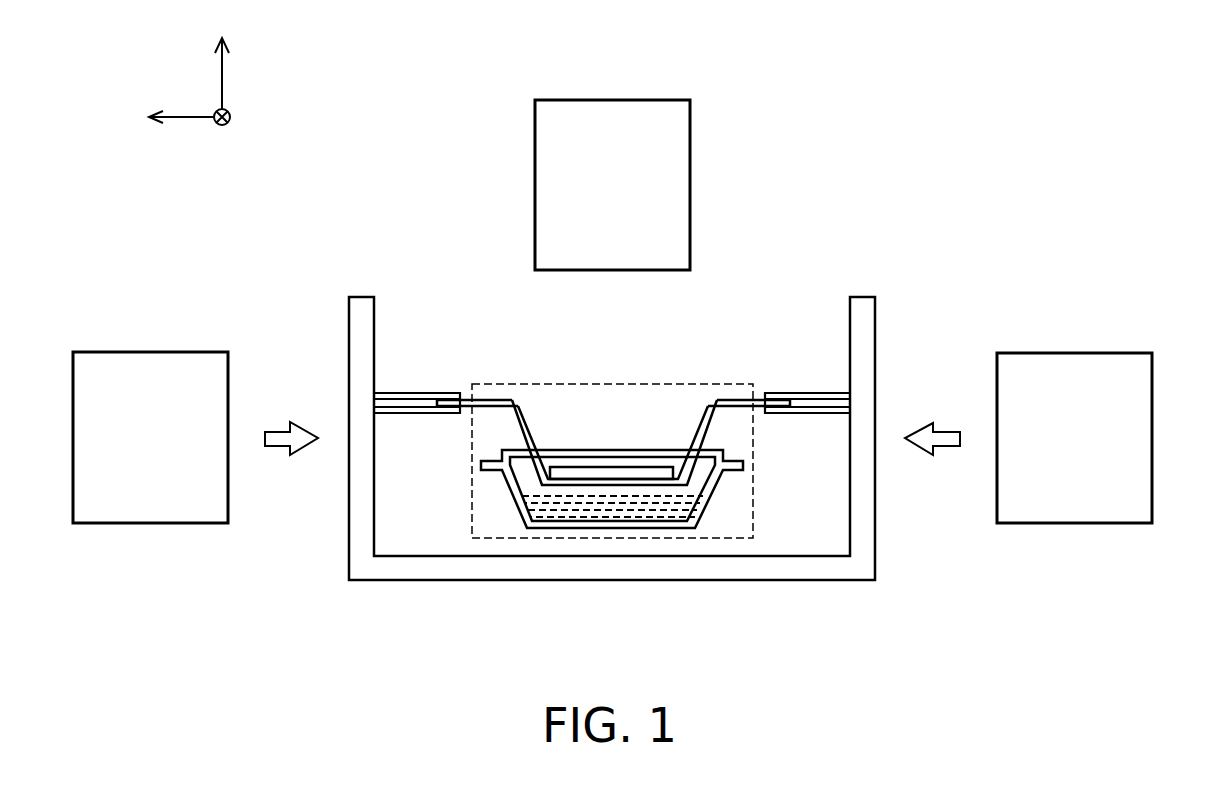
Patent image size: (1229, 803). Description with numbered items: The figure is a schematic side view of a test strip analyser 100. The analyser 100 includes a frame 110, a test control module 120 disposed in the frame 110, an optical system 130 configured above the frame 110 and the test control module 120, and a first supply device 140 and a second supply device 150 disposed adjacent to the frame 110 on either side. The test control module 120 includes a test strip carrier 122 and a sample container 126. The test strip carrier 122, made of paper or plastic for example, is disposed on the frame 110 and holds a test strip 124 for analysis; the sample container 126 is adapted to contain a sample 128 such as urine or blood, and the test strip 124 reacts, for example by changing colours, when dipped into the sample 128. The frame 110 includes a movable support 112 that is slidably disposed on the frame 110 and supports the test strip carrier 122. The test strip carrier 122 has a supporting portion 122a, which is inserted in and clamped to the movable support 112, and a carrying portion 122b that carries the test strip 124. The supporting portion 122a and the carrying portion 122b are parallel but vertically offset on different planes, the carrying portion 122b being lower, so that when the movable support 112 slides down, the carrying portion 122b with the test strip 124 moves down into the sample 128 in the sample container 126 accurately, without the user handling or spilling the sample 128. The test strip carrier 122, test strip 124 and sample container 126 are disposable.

The test strip analyser 100 is at (1226, 660).
The frame 110 is at (362, 536).
The movable support 112 is at (816, 394).
The test control module 120 is at (718, 385).
The test strip carrier 122 is at (611, 542).
The supporting portion 122a is at (447, 404).
The carrying portion 122b is at (577, 481).
The test strip 124 is at (617, 470).
The sample container 126 is at (712, 487).
The sample 128 is at (698, 504).
The optical system 130 is at (644, 100).
The first supply device 140 is at (1107, 353).
The second supply device 150 is at (184, 352).